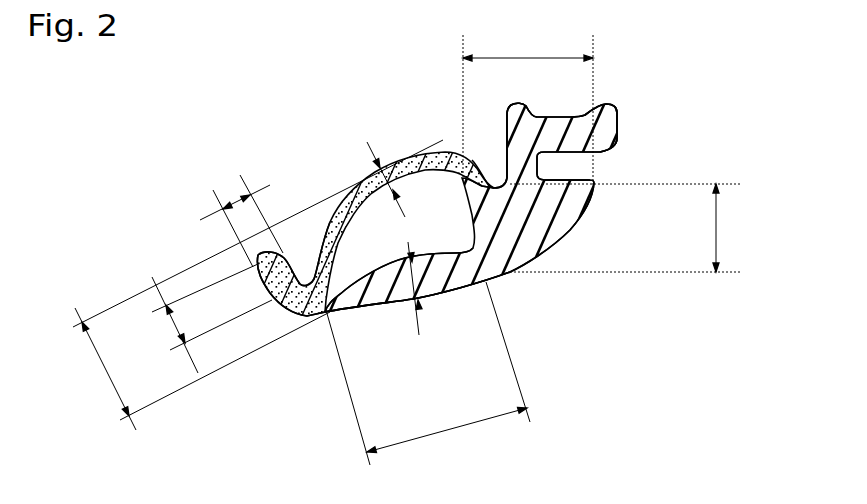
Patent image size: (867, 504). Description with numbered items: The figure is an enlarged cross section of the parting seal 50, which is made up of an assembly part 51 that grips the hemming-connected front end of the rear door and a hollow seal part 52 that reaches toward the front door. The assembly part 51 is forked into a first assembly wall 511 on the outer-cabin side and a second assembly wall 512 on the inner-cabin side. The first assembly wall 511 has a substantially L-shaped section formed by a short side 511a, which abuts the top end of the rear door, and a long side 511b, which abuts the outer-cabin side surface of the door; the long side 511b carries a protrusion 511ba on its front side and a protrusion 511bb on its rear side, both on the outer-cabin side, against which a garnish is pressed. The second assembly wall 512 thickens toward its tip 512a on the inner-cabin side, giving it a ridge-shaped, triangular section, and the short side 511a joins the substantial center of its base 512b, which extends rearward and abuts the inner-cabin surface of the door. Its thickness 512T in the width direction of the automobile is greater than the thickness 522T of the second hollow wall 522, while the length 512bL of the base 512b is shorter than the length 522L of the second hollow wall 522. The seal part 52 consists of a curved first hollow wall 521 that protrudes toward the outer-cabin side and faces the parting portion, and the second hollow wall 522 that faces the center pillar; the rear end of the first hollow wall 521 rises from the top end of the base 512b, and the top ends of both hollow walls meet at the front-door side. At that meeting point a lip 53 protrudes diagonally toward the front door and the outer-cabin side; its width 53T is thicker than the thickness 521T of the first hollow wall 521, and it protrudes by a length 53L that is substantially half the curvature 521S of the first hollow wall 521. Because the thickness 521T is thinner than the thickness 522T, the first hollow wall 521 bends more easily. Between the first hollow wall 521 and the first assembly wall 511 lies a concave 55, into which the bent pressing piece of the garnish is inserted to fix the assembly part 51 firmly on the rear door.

The parting seal 50 is at (296, 383).
The assembly part 51 is at (507, 278).
The first assembly wall 511 is at (585, 107).
The short side 511a is at (498, 180).
The long side 511b is at (600, 156).
The protrusion 511ba is at (525, 104).
The protrusion 511bb is at (604, 106).
The second assembly wall 512 is at (543, 210).
The tip 512a is at (487, 285).
The base 512b is at (560, 178).
The thickness of second assembly wall 512T is at (625, 228).
The length of base 512bL is at (528, 111).
The seal part 52 is at (330, 232).
The first hollow wall 521 is at (318, 245).
The thickness of first hollow wall 521T is at (372, 166).
The curvature of first hollow wall 521S is at (258, 285).
The second hollow wall 522 is at (382, 297).
The thickness of second hollow wall 522T is at (421, 300).
The length of second hollow wall 522L is at (428, 373).
The lip 53 is at (266, 283).
The width of lip 53T is at (224, 221).
The protruding length of lip 53L is at (212, 318).
The concave 55 is at (457, 153).